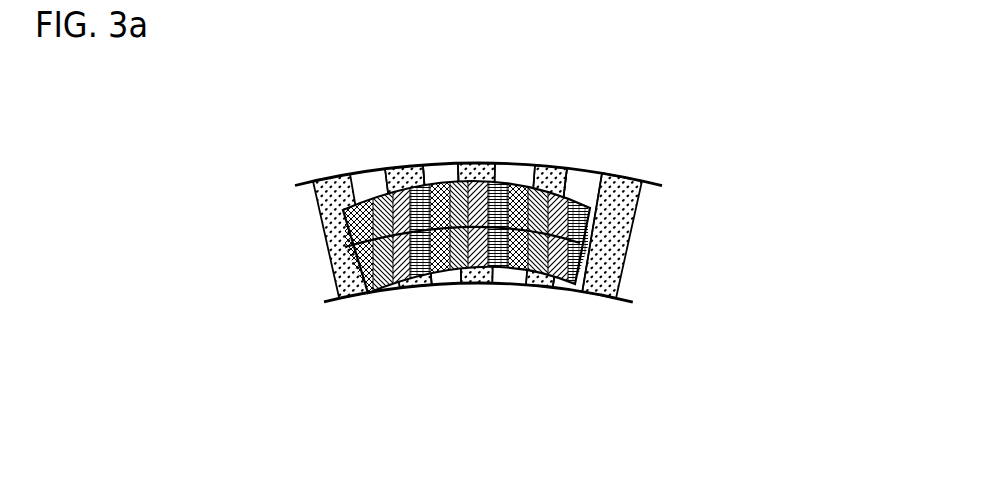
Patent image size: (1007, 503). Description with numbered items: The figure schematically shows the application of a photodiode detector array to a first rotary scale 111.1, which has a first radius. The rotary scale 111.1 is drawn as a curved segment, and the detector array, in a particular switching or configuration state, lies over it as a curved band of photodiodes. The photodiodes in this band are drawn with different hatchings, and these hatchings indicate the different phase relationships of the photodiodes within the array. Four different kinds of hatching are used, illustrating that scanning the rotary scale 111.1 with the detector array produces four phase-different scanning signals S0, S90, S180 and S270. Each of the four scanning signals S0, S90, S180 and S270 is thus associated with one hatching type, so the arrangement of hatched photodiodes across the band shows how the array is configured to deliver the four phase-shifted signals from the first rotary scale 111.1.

The first rotary scale 111.1 is at (306, 268).
The scanning signal S0 is at (400, 167).
The scanning signal S90 is at (495, 167).
The scanning signal S180 is at (440, 297).
The scanning signal S270 is at (577, 297).